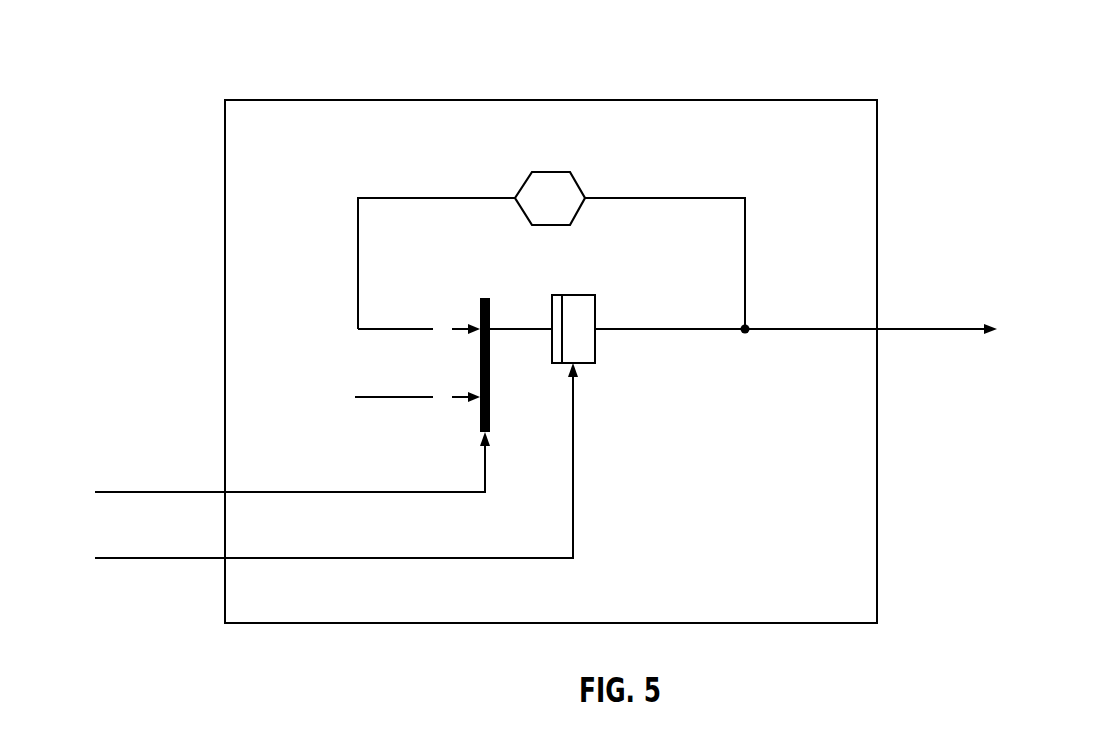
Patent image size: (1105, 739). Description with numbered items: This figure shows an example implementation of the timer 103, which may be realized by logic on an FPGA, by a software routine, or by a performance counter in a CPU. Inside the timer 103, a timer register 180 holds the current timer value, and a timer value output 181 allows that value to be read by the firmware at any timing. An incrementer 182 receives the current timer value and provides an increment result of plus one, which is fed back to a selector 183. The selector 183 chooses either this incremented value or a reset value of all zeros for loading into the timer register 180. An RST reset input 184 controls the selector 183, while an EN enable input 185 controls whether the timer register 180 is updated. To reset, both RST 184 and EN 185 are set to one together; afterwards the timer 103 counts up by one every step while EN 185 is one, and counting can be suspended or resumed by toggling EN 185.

The timer 103 is at (848, 100).
The timer register 180 is at (596, 338).
The timer value output 181 is at (968, 330).
The incrementer 182 is at (575, 175).
The selector 183 is at (483, 298).
The RST (reset input) 184 is at (165, 492).
The EN (enable input) 185 is at (168, 558).